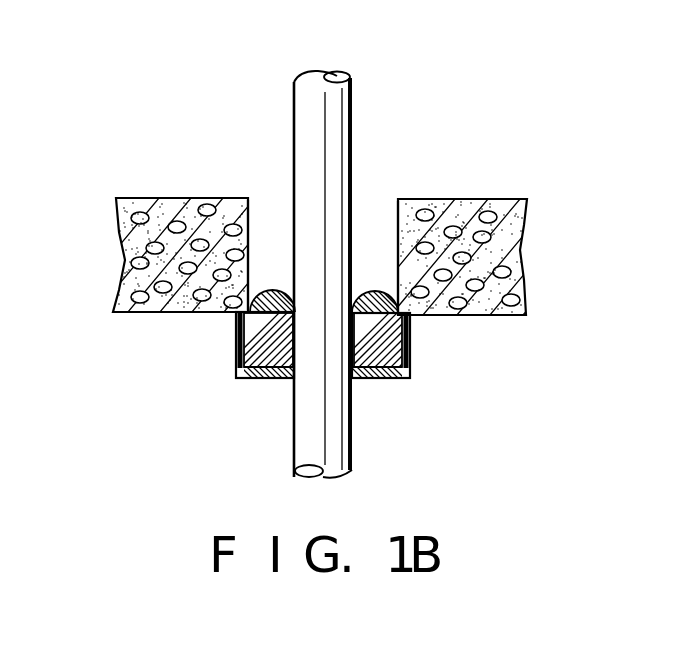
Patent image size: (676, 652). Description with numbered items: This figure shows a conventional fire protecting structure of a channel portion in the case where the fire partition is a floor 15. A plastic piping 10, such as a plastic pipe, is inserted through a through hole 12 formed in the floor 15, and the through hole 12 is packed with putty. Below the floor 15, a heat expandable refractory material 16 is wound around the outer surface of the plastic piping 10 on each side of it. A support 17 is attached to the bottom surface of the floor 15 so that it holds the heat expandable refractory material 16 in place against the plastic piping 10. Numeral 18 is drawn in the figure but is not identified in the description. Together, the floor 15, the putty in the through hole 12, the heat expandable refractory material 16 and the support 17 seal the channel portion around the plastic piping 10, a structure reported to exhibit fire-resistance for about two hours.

The plastic piping 10 is at (352, 90).
The through hole 12 is at (367, 236).
The floor 15 is at (165, 206).
The heat expandable refractory material 16 is at (384, 380).
The support 17 is at (257, 380).
The seal member 18 is at (240, 331).